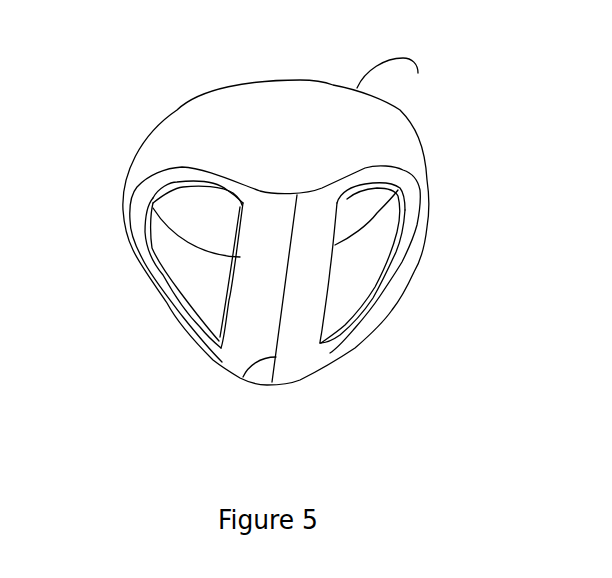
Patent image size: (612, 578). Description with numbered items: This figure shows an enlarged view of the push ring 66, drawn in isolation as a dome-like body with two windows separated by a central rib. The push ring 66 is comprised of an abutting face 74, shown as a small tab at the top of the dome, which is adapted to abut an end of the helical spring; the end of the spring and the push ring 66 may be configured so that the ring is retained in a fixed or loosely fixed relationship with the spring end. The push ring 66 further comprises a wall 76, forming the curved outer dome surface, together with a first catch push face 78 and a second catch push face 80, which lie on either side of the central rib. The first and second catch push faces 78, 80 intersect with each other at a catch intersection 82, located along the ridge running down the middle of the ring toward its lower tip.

The push ring 66 is at (426, 153).
The abutting face 74 is at (395, 82).
The wall 76 is at (232, 128).
The first catch push face 78 is at (300, 313).
The second catch push face 80 is at (247, 300).
The catch intersection 82 is at (245, 376).